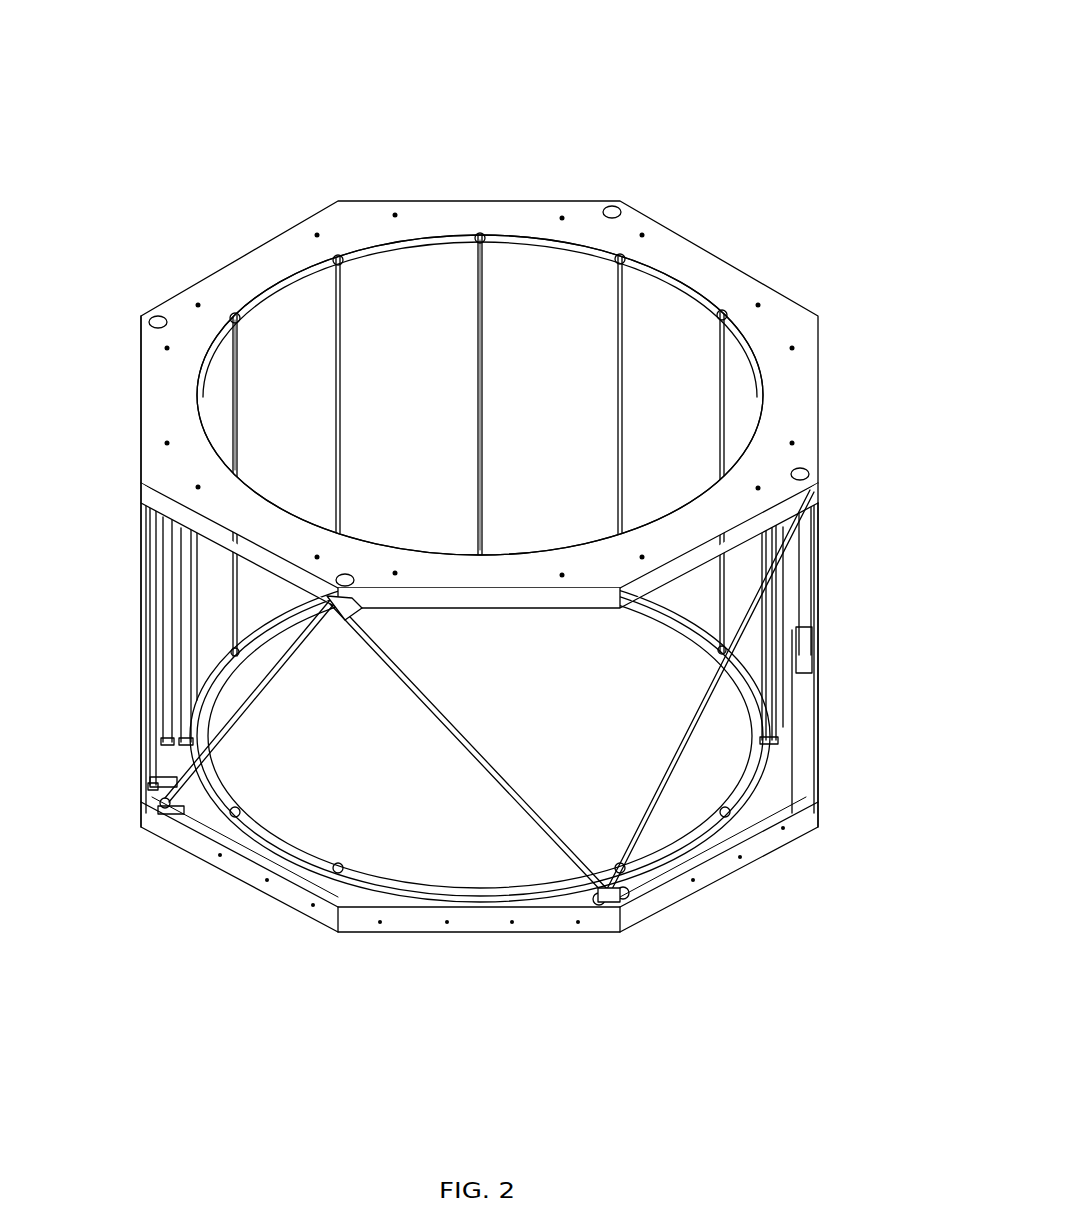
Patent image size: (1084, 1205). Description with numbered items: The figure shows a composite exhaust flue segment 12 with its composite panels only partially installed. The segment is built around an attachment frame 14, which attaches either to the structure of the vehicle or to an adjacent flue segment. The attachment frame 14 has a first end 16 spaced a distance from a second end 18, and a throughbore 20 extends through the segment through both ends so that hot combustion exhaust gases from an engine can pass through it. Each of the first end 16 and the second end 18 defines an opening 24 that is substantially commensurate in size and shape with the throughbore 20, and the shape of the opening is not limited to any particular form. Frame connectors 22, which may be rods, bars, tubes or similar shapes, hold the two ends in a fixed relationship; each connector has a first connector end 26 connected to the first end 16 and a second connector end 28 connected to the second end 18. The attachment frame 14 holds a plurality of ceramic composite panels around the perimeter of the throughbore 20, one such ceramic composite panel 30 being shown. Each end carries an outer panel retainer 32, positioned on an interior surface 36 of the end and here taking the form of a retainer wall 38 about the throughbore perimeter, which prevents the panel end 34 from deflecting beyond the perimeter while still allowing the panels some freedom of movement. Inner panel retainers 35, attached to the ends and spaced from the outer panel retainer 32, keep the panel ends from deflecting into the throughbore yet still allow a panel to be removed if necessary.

The composite exhaust flue segment 12 is at (738, 108).
The attachment frame 14 is at (145, 377).
The first end 16 is at (252, 265).
The second end 18 is at (763, 853).
The throughbore 20 is at (352, 779).
The frame connectors 22 is at (470, 740).
The opening 24 is at (400, 468).
The first connector end 26 is at (373, 625).
The second connector end 28 is at (580, 886).
The ceramic composite panel 30 is at (402, 300).
The outer panel retainer 32 is at (360, 893).
The panel end 34 is at (675, 298).
The inner panel retainers 35 is at (627, 260).
The interior surface 36 is at (800, 766).
The retainer wall 38 is at (200, 817).